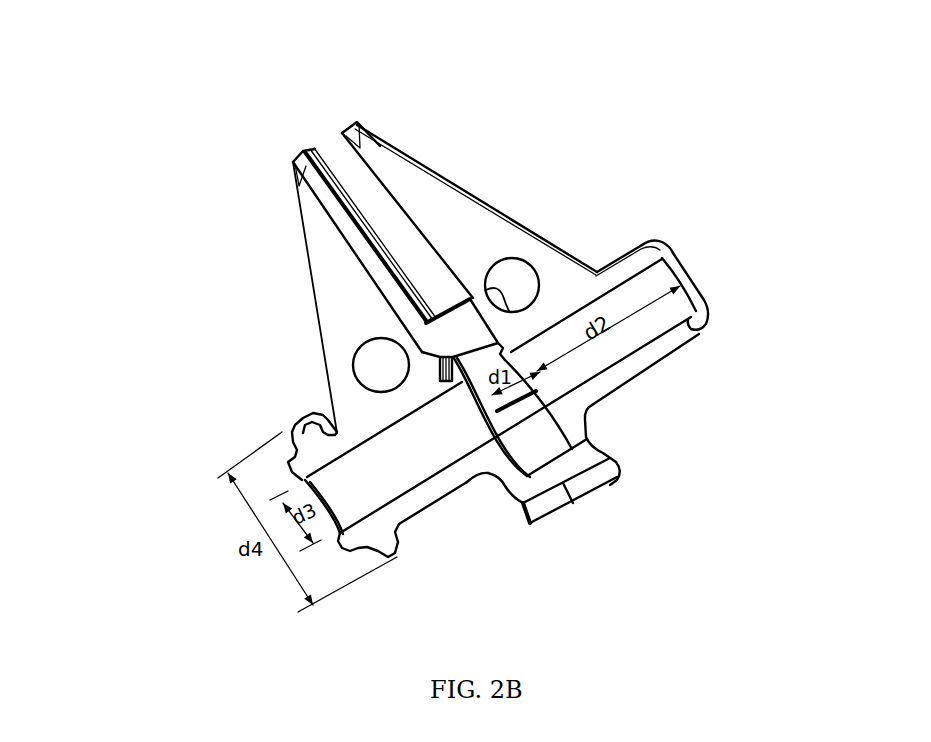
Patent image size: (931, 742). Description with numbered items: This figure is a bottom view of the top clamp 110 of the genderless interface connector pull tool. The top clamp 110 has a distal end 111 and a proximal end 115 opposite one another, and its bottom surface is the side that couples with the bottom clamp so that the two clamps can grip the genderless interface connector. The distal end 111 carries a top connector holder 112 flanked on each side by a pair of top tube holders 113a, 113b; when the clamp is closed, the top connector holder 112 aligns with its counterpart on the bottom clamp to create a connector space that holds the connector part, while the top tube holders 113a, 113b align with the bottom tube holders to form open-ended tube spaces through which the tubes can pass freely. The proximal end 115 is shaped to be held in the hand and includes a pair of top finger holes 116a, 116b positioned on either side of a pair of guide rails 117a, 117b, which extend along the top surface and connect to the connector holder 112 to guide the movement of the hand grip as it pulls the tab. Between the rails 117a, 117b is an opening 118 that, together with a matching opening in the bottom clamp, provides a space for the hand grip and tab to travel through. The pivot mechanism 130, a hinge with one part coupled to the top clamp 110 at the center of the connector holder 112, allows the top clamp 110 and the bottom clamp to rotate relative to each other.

The top clamp 110 is at (176, 80).
The distal end 111 is at (617, 392).
The top connector holder 112 is at (520, 430).
The top tube holder 113a is at (390, 555).
The top tube holder 113b is at (630, 265).
The proximal end 115 is at (463, 233).
The top finger hole 116a is at (386, 364).
The top finger hole 116b is at (514, 272).
The guide rail 117a is at (318, 157).
The guide rail 117b is at (365, 130).
The opening 118 is at (358, 187).
The pivot mechanism 130 is at (583, 490).